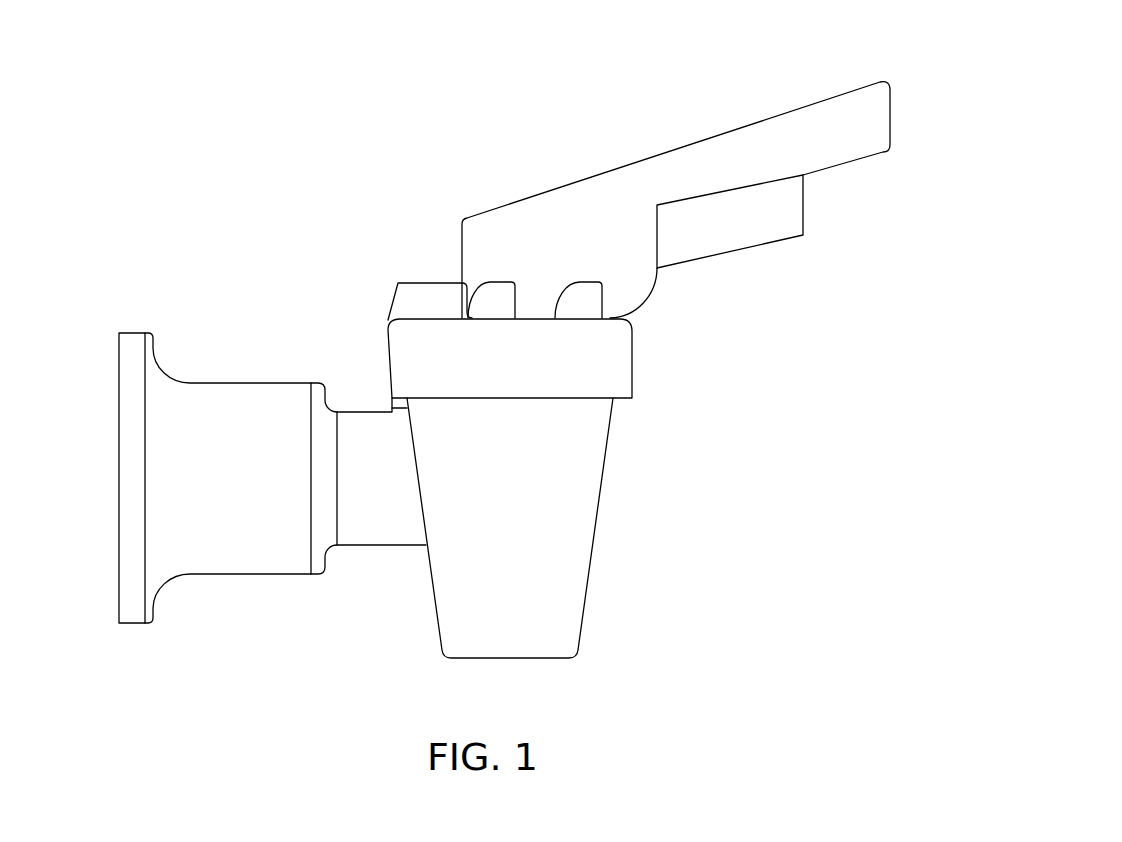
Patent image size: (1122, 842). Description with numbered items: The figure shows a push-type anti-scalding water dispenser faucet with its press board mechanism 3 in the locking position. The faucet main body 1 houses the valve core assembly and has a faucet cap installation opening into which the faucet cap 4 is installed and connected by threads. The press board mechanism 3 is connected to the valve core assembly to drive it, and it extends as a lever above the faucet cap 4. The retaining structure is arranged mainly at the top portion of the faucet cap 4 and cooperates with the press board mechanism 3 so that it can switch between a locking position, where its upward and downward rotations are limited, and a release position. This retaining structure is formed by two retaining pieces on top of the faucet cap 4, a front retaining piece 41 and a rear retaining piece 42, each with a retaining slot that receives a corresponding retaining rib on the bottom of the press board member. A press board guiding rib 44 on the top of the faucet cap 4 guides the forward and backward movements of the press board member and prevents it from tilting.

The faucet main body 1 is at (244, 447).
The press board mechanism 3 is at (601, 214).
The faucet cap 4 is at (438, 355).
The front retaining piece 41 is at (495, 299).
The rear retaining piece 42 is at (583, 297).
The press board guiding rib 44 is at (437, 301).